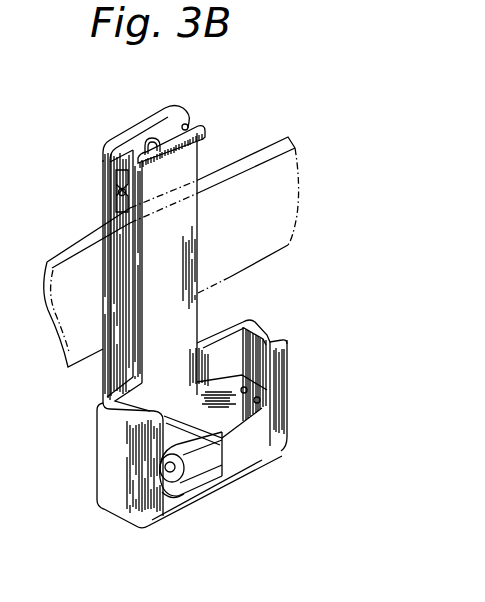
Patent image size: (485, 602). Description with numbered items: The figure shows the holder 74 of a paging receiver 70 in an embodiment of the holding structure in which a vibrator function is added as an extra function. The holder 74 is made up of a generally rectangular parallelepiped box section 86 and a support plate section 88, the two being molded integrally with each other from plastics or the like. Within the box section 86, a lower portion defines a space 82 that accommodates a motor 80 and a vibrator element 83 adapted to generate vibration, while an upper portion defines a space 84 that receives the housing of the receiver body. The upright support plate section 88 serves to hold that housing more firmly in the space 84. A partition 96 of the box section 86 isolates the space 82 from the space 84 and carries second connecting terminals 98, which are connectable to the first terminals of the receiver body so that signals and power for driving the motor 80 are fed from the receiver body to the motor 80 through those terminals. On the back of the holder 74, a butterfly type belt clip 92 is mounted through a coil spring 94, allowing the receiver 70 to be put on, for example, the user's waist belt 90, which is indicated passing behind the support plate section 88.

The paging receiver 70 is at (320, 121).
The holder 74 is at (305, 342).
The motor 80 is at (209, 485).
The space 82 is at (174, 497).
The vibrator element 83 is at (163, 463).
The space 84 is at (223, 360).
The box section 86 is at (297, 414).
The support plate section 88 is at (176, 243).
The waist belt 90 is at (298, 195).
The butterfly type belt clip 92 is at (102, 183).
The coil spring 94 is at (142, 125).
The partition 96 is at (244, 396).
The second connecting terminals 98 is at (258, 405).